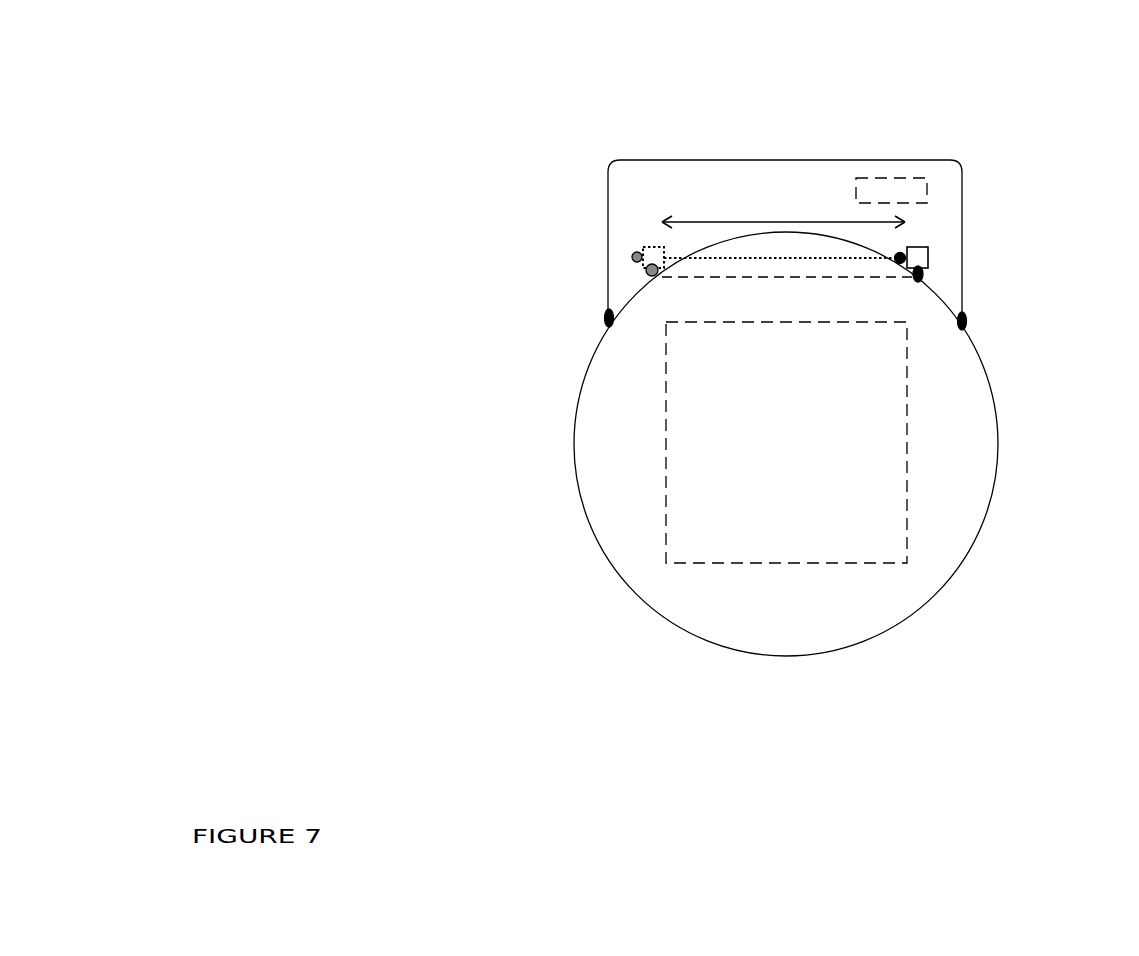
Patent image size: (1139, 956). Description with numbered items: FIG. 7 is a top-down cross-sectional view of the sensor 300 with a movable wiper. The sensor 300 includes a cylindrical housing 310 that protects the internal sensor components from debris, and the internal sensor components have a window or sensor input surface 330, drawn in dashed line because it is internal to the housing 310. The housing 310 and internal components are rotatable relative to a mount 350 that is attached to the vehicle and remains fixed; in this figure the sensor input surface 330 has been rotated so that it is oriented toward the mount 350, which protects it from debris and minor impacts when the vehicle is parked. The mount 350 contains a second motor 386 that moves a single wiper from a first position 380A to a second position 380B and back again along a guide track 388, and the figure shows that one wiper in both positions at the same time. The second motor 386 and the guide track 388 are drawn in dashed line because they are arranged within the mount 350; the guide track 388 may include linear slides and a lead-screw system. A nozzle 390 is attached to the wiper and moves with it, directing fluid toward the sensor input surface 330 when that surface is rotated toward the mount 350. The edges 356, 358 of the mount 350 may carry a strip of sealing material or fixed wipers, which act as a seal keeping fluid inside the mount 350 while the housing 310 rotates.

The sensor 300 is at (358, 118).
The housing 310 is at (998, 440).
The sensor input surface 330 is at (907, 462).
The mount 350 is at (962, 235).
The edge of the mount 356 is at (966, 322).
The edge of the mount 358 is at (604, 319).
The first position of the wiper 380A is at (930, 265).
The second position of the wiper 380B is at (642, 266).
The second motor 386 is at (902, 180).
The guide track 388 is at (760, 258).
The nozzle 390 is at (900, 258).